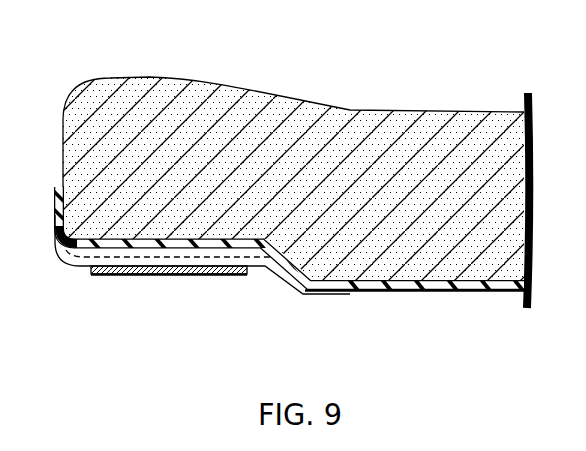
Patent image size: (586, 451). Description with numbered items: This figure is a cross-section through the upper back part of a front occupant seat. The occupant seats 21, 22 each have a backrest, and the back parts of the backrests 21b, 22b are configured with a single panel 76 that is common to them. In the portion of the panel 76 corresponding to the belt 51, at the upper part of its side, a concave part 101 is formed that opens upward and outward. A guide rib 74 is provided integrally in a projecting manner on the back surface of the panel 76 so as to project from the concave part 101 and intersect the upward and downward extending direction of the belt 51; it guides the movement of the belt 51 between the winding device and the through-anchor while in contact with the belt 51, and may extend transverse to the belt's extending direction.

The occupant seat 21 is at (421, 104).
The occupant seat 22 is at (296, 160).
The backrest 21b is at (188, 85).
The backrest 22b is at (230, 58).
The guide rib 74 is at (83, 259).
The belt 51 is at (175, 276).
The concave part 101 is at (246, 247).
The panel 76 is at (407, 292).